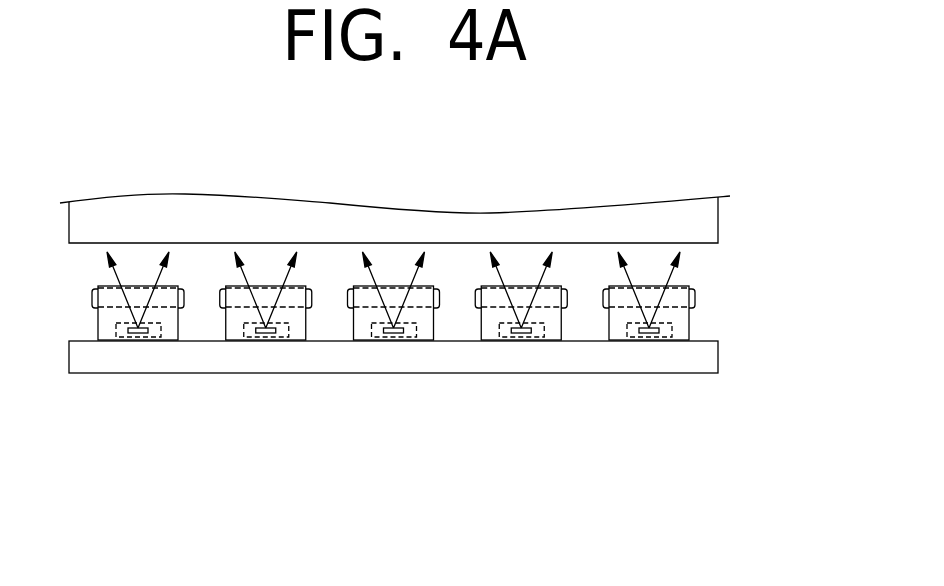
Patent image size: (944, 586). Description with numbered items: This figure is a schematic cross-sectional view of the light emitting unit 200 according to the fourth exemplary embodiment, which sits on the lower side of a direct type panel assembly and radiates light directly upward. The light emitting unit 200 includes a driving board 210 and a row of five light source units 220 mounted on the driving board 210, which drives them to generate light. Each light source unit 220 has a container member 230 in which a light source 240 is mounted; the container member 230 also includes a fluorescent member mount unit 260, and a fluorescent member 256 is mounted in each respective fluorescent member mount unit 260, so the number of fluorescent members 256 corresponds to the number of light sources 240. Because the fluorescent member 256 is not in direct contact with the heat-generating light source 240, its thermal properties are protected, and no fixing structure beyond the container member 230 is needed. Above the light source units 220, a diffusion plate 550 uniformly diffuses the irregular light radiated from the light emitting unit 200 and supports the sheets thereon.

The light emitting unit 200 is at (753, 277).
The driving board 210 is at (142, 365).
The light source unit 220 is at (393, 369).
The container member 230 is at (300, 330).
The light source 240 is at (258, 333).
The fluorescent member 256 is at (218, 300).
The fluorescent member mount unit 260 is at (355, 297).
The diffusion plate 550 is at (627, 218).